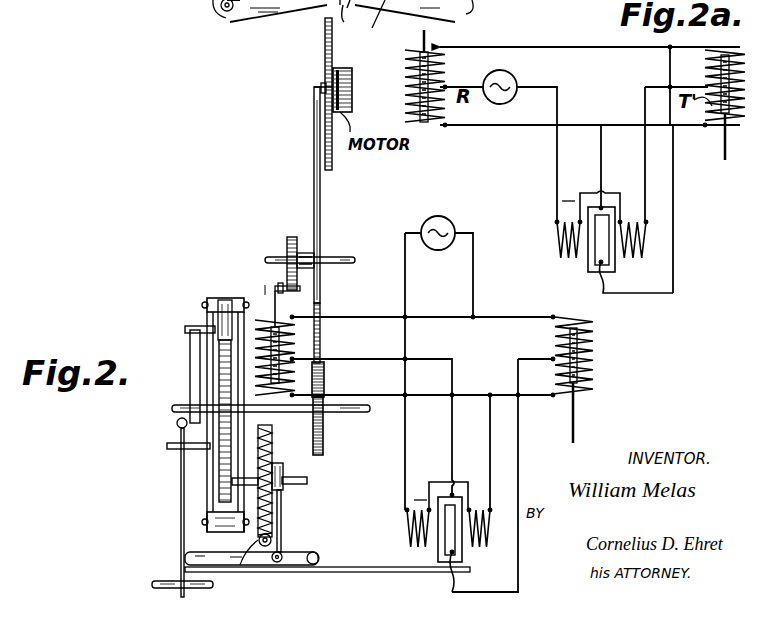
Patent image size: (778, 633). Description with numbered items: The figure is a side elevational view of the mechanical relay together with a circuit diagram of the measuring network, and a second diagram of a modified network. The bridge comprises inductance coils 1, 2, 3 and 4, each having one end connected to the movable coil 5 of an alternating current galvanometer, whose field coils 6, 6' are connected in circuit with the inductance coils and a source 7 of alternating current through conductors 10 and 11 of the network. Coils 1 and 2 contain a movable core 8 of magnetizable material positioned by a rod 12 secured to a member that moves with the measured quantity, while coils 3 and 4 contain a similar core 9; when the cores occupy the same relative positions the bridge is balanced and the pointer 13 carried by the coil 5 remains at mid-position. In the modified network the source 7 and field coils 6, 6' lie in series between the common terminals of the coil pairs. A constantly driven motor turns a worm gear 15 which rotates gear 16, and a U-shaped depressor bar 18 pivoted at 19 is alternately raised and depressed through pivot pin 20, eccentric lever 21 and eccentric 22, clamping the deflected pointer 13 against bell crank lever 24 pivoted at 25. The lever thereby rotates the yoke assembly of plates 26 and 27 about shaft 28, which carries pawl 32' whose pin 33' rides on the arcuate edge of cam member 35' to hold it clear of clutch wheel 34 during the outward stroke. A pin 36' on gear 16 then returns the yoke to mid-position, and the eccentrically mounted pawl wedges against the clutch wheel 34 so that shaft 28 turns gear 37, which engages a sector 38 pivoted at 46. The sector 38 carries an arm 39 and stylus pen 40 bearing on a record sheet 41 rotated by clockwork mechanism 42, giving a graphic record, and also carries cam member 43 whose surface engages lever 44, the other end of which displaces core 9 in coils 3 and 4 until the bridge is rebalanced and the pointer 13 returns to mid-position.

In FIG. 2a, the inductance coil 1 is at (706, 52).
In FIG. 2, the inductance coil 1 is at (590, 330).
In FIG. 2a, the inductance coil 2 is at (706, 114).
In FIG. 2, the inductance coil 2 is at (586, 372).
In FIG. 2a, the inductance coil 3 is at (445, 118).
In FIG. 2, the inductance coil 3 is at (270, 392).
In FIG. 2a, the inductance coil 4 is at (450, 52).
In FIG. 2, the inductance coil 4 is at (287, 329).
In FIG. 2a, the movable coil 5 is at (598, 268).
In FIG. 2, the movable coil 5 is at (464, 562).
In FIG. 2a, the field coil 6 is at (555, 239).
In FIG. 2, the field coil 6 is at (408, 527).
In FIG. 2a, the field coil 6' is at (643, 239).
In FIG. 2, the field coil 6' is at (492, 527).
In FIG. 2a, the source of alternating current 7 is at (512, 77).
In FIG. 2, the source of alternating current 7 is at (450, 222).
In FIG. 2a, the movable core 8 is at (708, 72).
In FIG. 2, the movable core 8 is at (590, 355).
In FIG. 2, the core 9 is at (412, 103).
In FIG. 2, the conductor 10 is at (456, 368).
In FIG. 2, the conductor 11 is at (518, 378).
In FIG. 2a, the rod 12 is at (725, 140).
In FIG. 2, the rod 12 is at (580, 418).
In FIG. 2, the pointer 13 is at (370, 578).
In FIG. 2, the worm gear 15 is at (255, 565).
In FIG. 2, the gear 16 is at (272, 445).
In FIG. 2, the depressor bar 18 is at (148, 556).
In FIG. 2, the pivot 19 is at (320, 552).
In FIG. 2, the pivot pin 20 is at (282, 552).
In FIG. 2, the eccentric lever 21 is at (283, 510).
In FIG. 2, the eccentric 22 is at (288, 475).
In FIG. 2, the bell crank lever 24 is at (277, 28).
In FIG. 2, the pivot 25 is at (216, 33).
In FIG. 2, the plate 26 is at (210, 357).
In FIG. 2, the plate 27 is at (244, 320).
In FIG. 2, the shaft 28 is at (172, 407).
In FIG. 2, the pawl 32' is at (225, 391).
In FIG. 2, the pin 33' is at (181, 315).
In FIG. 2, the clutch wheel 34 is at (215, 445).
In FIG. 2, the cam member 35' is at (166, 372).
In FIG. 2, the pin 36' is at (188, 526).
In FIG. 2, the gear 37 is at (324, 448).
In FIG. 2, the sector 38 is at (325, 340).
In FIG. 2, the arm 39 is at (320, 200).
In FIG. 2, the stylus pen 40 is at (314, 90).
In FIG. 2, the record sheet 41 is at (320, 58).
In FIG. 2, the clockwork mechanism 42 is at (353, 97).
In FIG. 2, the cam member 43 is at (290, 237).
In FIG. 2, the lever 44 is at (280, 295).
In FIG. 2, the pivot 46 is at (340, 256).